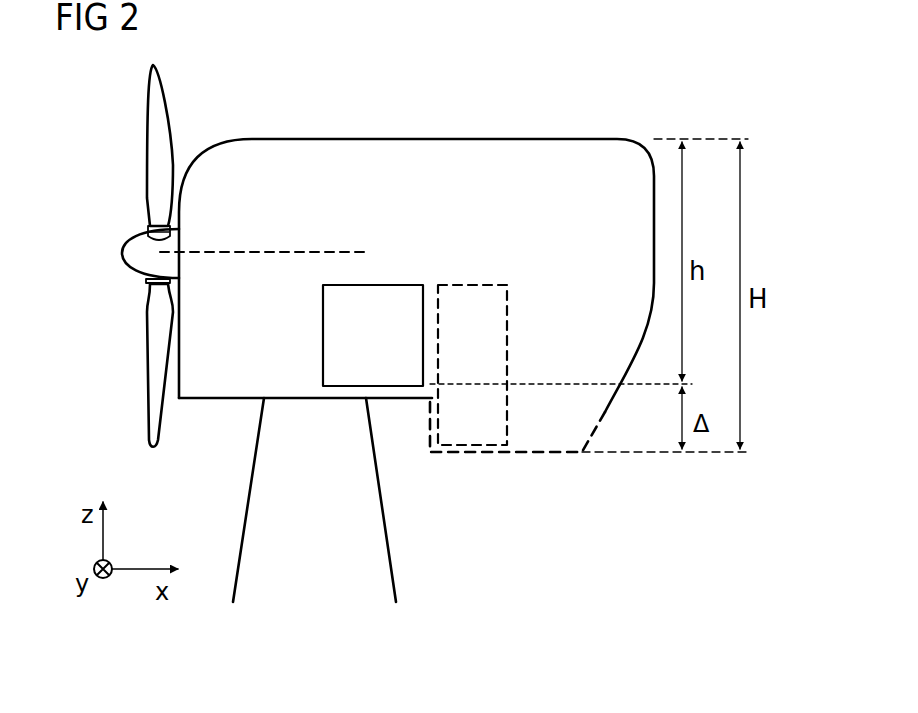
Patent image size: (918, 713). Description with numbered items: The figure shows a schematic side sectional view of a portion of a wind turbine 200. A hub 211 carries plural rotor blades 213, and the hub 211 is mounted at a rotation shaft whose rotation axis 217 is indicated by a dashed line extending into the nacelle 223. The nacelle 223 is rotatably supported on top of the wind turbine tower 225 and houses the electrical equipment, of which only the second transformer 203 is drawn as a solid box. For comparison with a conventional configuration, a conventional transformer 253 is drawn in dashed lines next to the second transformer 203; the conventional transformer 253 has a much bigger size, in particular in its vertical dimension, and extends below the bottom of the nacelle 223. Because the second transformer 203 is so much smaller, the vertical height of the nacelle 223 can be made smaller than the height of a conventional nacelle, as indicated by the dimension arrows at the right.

The wind turbine 200 is at (702, 97).
The second transformer 203 is at (323, 338).
The hub 211 is at (130, 253).
The rotor blades 213 is at (155, 150).
The rotation axis 217 is at (290, 250).
The nacelle 223 is at (421, 138).
The wind turbine tower 225 is at (248, 500).
The conventional transformer 253 is at (507, 360).